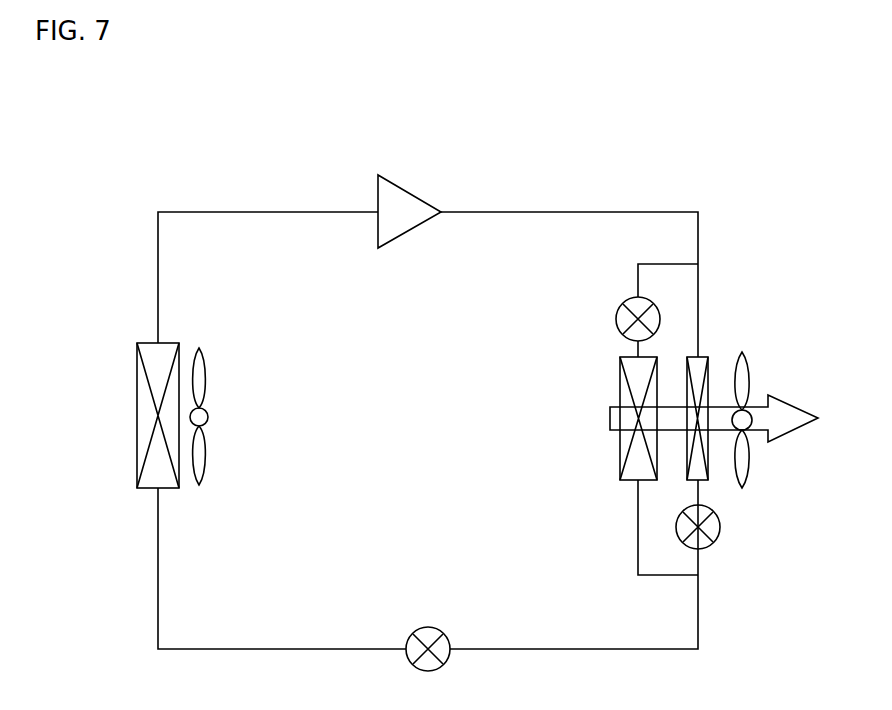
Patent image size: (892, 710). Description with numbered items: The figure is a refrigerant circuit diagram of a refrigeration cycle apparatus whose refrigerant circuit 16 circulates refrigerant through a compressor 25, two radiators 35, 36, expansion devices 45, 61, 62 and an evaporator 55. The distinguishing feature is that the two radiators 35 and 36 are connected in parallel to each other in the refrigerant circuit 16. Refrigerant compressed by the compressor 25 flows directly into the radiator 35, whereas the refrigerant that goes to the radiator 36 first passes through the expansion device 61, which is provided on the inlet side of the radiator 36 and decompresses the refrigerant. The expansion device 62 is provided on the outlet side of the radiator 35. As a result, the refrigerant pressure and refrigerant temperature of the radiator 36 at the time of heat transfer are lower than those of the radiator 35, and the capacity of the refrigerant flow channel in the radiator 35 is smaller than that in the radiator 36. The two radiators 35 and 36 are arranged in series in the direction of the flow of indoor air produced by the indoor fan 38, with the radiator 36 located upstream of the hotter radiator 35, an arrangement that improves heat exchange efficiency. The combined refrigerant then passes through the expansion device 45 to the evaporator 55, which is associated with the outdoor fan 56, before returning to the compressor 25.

The refrigerant circuit 16 is at (553, 212).
The compressor 25 is at (403, 187).
The radiator 35 is at (703, 355).
The radiator 36 is at (620, 375).
The indoor fan 38 is at (748, 472).
The expansion device 45 is at (428, 627).
The evaporator 55 is at (137, 415).
The outdoor fan 56 is at (207, 452).
The expansion device 61 is at (616, 320).
The expansion device 62 is at (720, 527).